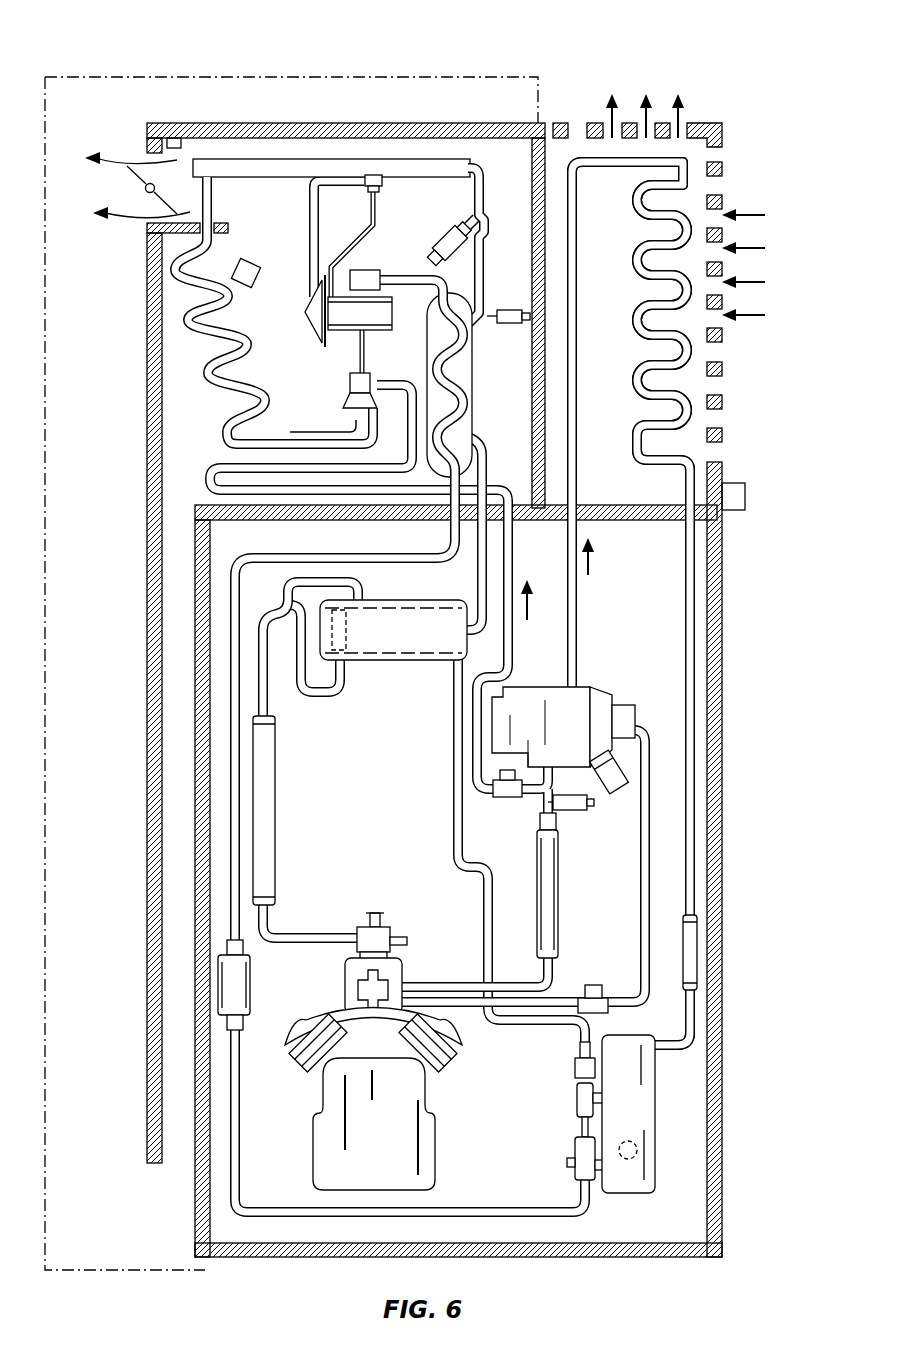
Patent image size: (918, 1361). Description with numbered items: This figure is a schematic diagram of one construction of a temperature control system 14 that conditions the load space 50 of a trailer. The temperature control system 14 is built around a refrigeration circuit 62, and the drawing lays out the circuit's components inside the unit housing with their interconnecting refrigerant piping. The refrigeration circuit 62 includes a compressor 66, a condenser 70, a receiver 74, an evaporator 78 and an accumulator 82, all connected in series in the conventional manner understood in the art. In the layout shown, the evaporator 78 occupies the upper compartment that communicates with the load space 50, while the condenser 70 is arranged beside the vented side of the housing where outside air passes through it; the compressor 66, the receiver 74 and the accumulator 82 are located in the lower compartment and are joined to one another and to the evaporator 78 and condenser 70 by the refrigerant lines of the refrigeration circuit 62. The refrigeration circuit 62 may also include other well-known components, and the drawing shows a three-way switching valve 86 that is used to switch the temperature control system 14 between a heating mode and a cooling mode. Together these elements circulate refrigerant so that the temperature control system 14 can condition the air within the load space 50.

The temperature control system 14 is at (212, 60).
The load space 50 is at (50, 622).
The refrigeration circuit 62 is at (792, 78).
The condenser 70 is at (678, 360).
The evaporator 78 is at (190, 338).
The accumulator 82 is at (390, 632).
The three-way switching valve 86 is at (600, 684).
The compressor 66 is at (403, 1110).
The receiver 74 is at (638, 1107).